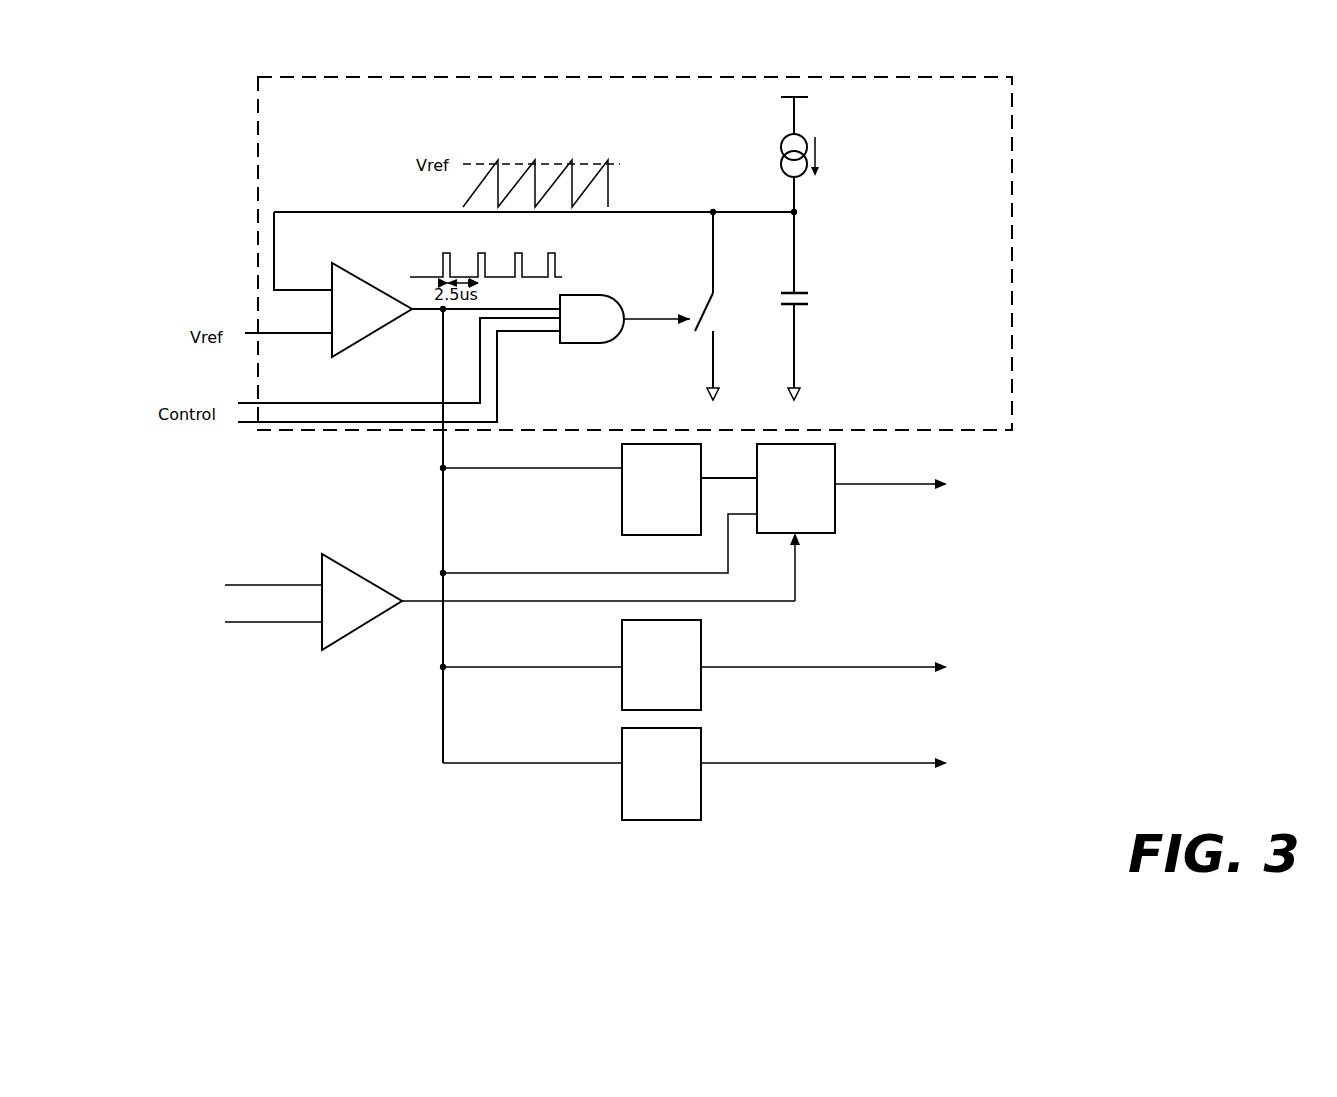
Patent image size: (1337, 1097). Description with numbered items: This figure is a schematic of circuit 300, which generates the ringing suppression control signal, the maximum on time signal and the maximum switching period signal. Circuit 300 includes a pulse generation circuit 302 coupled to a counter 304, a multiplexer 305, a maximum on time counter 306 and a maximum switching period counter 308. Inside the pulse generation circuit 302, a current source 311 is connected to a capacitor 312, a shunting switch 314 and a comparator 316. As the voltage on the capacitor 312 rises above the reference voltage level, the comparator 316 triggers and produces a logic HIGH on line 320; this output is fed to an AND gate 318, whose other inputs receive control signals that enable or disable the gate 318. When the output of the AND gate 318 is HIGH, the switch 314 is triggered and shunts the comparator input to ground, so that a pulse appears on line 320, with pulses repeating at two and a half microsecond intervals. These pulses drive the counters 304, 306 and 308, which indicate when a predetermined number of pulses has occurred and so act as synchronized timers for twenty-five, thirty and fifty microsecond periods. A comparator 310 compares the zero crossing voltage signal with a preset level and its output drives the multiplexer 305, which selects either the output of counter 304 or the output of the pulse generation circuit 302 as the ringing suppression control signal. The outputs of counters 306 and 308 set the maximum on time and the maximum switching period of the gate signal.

The circuit 300 is at (1118, 200).
The pulse generation circuit 302 is at (460, 76).
The counter 304 is at (623, 527).
The multiplexer 305 is at (835, 530).
The maximum on time counter 306 is at (701, 680).
The maximum switching period counter 308 is at (678, 825).
The comparator 310 is at (325, 648).
The current source 311 is at (798, 143).
The capacitor 312 is at (800, 292).
The shunting switch 314 is at (704, 290).
The comparator 316 is at (350, 262).
The AND gate 318 is at (610, 340).
The line 320 is at (443, 530).